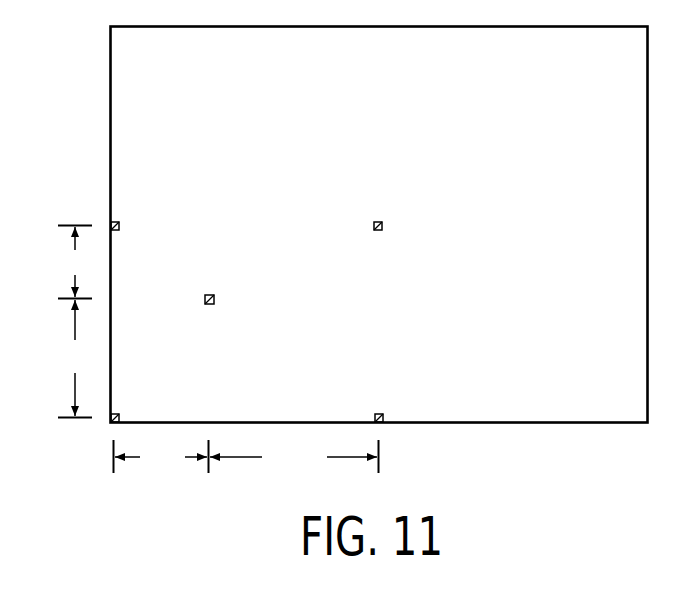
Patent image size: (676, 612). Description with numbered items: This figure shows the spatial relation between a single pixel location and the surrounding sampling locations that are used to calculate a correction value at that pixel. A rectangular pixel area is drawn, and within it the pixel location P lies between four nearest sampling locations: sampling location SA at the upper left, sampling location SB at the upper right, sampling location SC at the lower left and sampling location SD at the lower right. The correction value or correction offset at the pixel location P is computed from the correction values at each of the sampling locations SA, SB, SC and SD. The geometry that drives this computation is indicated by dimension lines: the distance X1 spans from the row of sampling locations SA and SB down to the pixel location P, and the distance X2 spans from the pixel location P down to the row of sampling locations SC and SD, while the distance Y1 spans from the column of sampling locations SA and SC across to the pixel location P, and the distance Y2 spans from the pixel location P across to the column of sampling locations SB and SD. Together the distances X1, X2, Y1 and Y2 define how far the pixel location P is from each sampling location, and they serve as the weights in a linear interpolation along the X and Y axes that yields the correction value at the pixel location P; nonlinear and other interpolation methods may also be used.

The sampling location SA is at (135, 207).
The sampling location SB is at (396, 205).
The sampling location SC is at (131, 401).
The sampling location SD is at (396, 401).
The pixel location P is at (219, 285).
The distance in the X axis X1 is at (64, 262).
The distance in the X axis X2 is at (64, 359).
The distance in the Y axis Y1 is at (161, 459).
The distance in the Y axis Y2 is at (294, 459).